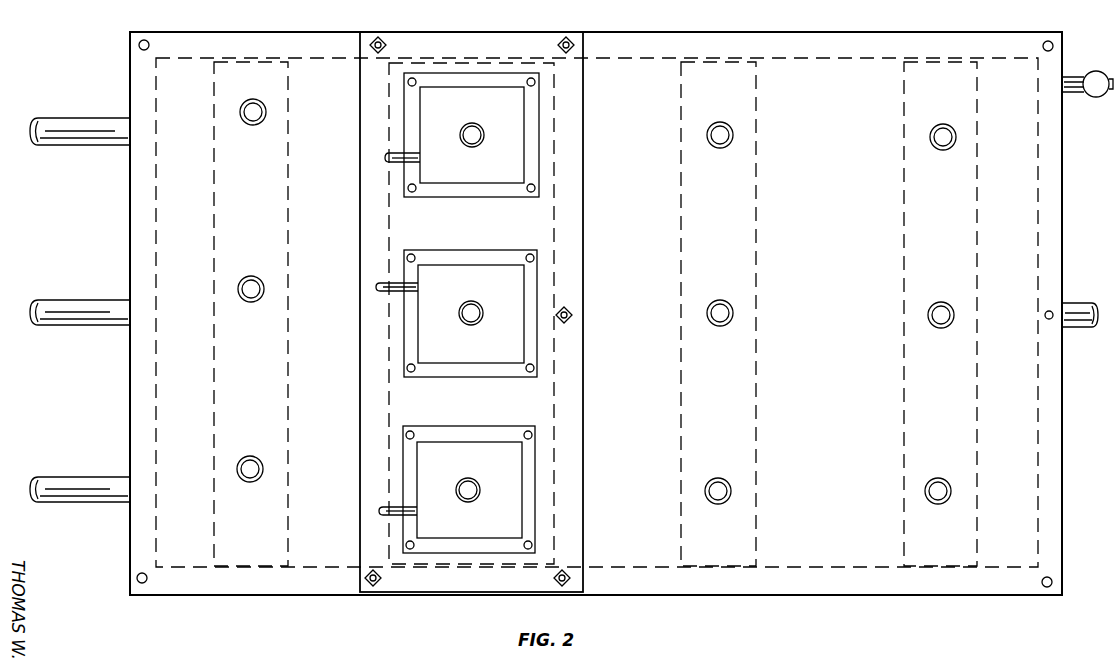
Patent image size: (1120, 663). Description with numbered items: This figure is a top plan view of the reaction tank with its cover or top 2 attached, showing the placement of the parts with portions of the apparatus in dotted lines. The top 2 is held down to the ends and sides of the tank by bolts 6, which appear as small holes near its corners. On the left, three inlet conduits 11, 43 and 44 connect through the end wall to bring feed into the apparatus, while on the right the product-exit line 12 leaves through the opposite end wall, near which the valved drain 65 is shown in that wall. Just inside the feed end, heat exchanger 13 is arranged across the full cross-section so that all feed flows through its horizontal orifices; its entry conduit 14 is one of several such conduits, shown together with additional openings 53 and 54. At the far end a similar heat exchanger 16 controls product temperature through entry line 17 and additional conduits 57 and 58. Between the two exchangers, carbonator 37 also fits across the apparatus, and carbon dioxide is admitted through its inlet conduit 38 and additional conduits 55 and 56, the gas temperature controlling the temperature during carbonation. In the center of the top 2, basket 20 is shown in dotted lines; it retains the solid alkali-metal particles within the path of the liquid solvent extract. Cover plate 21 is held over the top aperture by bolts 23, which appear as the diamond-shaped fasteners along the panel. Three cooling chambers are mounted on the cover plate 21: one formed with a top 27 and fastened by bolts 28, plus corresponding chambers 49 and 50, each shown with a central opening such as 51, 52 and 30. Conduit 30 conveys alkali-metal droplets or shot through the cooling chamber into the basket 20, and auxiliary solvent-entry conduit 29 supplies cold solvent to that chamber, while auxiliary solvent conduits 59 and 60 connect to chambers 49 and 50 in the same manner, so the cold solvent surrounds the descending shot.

The top 2 is at (724, 34).
The bolts 6 is at (1053, 46).
The feed-entry line 11 is at (42, 300).
The product-exit line 12 is at (1081, 302).
The heat exchanger 13 is at (288, 178).
The entry conduit 14 is at (249, 278).
The heat exchanger 16 is at (977, 200).
The entry line 17 is at (945, 327).
The basket 20 is at (553, 228).
The cover plate 21 is at (584, 240).
The bolts 23 is at (573, 316).
The top 27 is at (522, 334).
The bolts 28 is at (527, 253).
The auxiliary solvent-entry conduit 29 is at (386, 283).
The conduit 30 is at (478, 321).
The carbonator 37 is at (756, 198).
The inlet conduit 38 is at (727, 324).
The inlet conduit 43 is at (42, 477).
The inlet conduit 44 is at (43, 118).
The chamber 49 is at (488, 489).
The chamber 50 is at (522, 131).
The lower plate opening 51 is at (475, 498).
The upper plate opening 52 is at (480, 143).
The opening 53 is at (255, 458).
The opening 54 is at (256, 100).
The conduit 55 is at (725, 502).
The conduit 56 is at (719, 148).
The conduit 57 is at (945, 502).
The conduit 58 is at (943, 150).
The auxiliary solvent conduit 59 is at (388, 517).
The auxiliary solvent conduit 60 is at (387, 164).
The valved drain 65 is at (1089, 97).